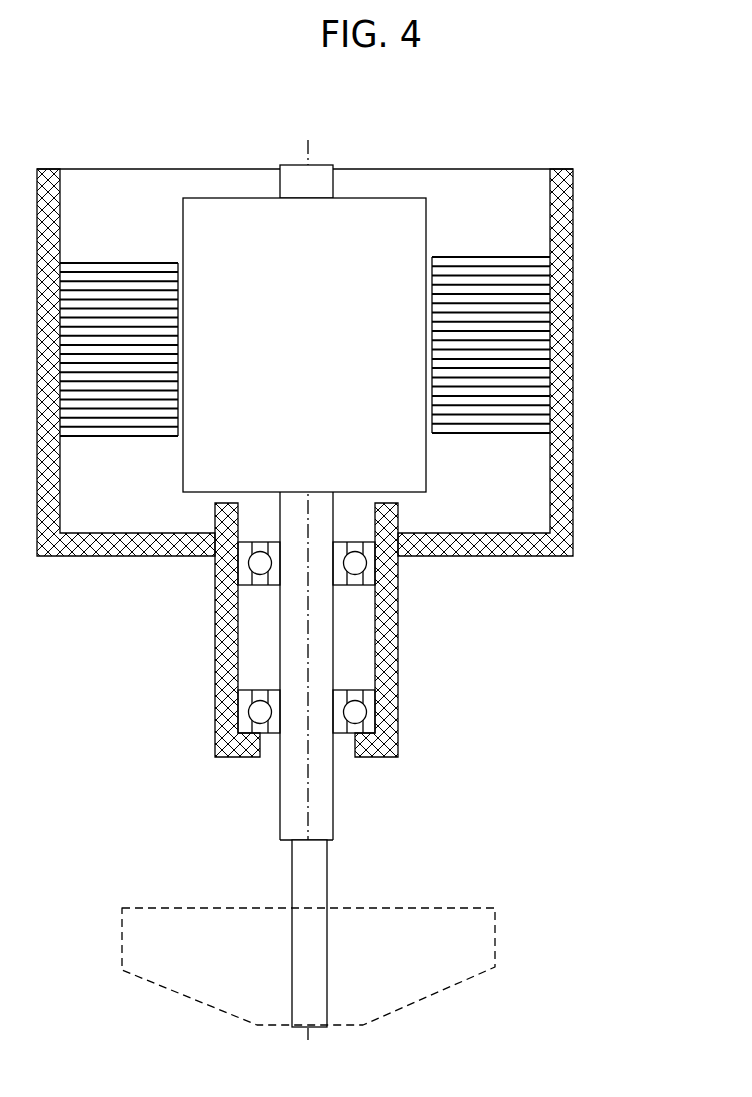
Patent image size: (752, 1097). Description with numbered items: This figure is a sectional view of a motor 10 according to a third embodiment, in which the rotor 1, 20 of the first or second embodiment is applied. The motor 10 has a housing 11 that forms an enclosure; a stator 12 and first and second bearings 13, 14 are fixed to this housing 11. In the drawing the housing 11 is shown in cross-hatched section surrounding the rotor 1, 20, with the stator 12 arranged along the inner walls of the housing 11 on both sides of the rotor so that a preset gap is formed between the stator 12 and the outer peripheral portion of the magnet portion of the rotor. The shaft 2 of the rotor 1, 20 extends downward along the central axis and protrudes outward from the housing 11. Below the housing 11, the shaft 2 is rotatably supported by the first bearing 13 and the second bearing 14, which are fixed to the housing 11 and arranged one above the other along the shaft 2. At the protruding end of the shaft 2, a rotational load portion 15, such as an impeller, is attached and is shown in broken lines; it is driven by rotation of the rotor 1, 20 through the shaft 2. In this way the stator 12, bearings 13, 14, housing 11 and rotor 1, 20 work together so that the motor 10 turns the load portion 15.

The rotor 1 is at (376, 550).
The motor 20 is at (327, 162).
The motor 10 is at (500, 130).
The housing 11 is at (573, 332).
The stator 12 is at (513, 412).
The first bearing 13 is at (397, 593).
The second bearing 14 is at (397, 745).
The shaft 2 is at (287, 830).
The rotational load portion 15 is at (427, 907).